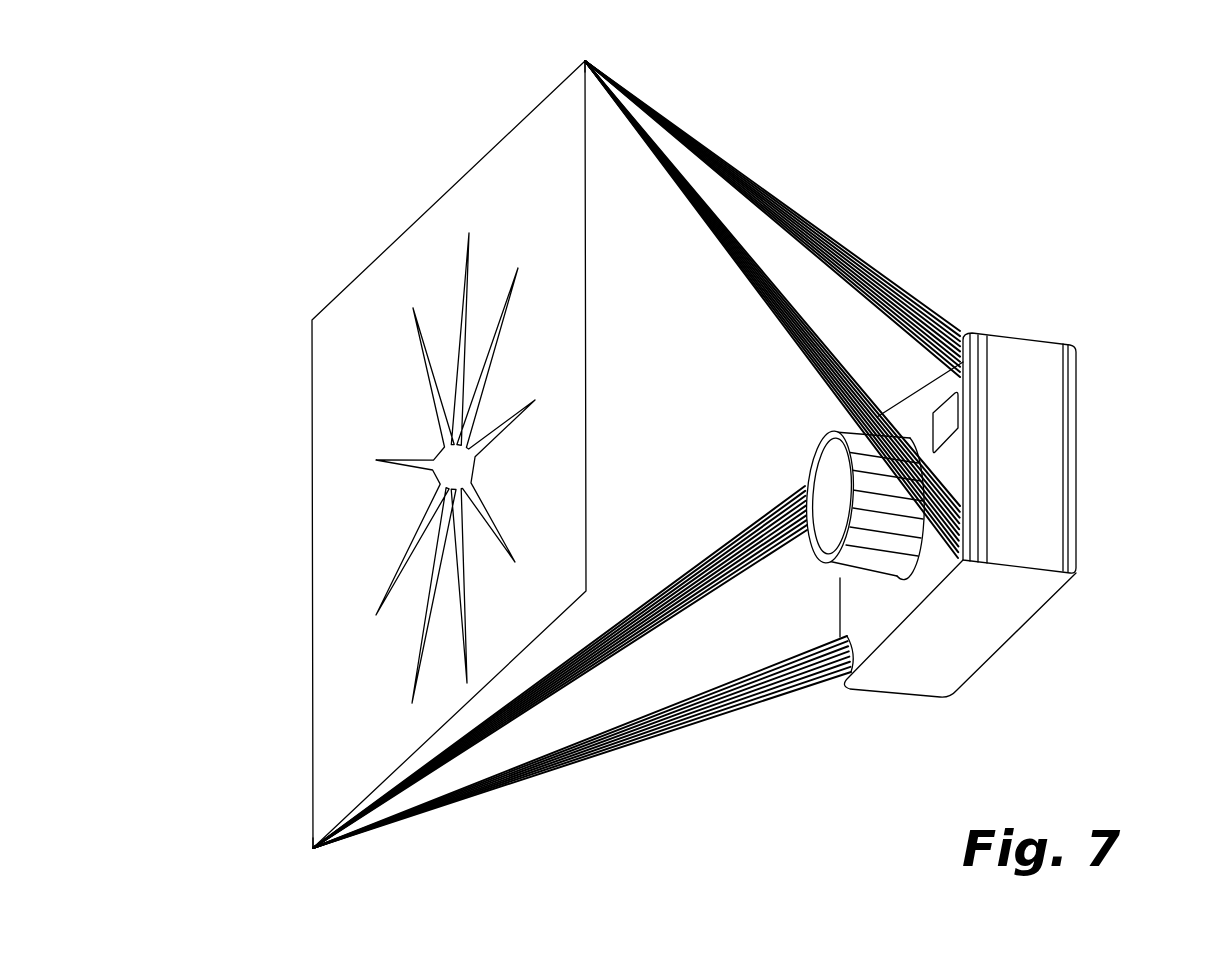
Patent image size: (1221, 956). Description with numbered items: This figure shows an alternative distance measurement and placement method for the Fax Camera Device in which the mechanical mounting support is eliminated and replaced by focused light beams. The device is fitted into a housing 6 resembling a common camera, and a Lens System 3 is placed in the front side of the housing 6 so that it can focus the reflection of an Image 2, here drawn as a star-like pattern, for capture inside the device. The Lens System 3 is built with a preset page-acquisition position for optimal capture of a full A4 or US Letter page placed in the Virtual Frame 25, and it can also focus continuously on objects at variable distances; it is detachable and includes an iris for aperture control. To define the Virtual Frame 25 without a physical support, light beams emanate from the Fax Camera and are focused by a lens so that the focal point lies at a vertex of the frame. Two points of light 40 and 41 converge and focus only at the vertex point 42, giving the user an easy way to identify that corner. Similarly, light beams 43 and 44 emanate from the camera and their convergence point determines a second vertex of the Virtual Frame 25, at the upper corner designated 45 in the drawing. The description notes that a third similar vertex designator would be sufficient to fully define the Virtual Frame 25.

The Image 2 is at (426, 468).
The Lens System 3 is at (811, 475).
The housing 6 is at (1020, 515).
The Virtual Frame 25 is at (434, 454).
The light beam 40 is at (583, 742).
The light beam 41 is at (560, 667).
The vertex point 42 is at (239, 871).
The light beam 43 is at (792, 309).
The light beam 44 is at (777, 219).
The upper corner point of screen 45 is at (502, 46).